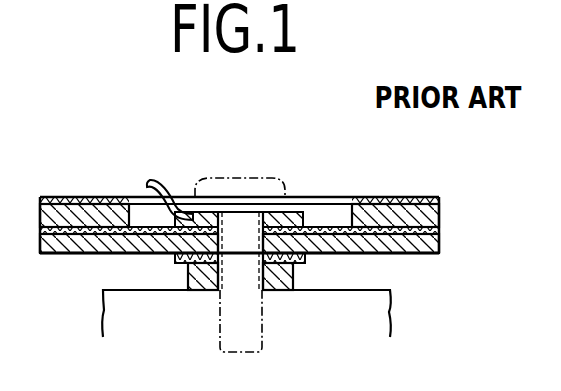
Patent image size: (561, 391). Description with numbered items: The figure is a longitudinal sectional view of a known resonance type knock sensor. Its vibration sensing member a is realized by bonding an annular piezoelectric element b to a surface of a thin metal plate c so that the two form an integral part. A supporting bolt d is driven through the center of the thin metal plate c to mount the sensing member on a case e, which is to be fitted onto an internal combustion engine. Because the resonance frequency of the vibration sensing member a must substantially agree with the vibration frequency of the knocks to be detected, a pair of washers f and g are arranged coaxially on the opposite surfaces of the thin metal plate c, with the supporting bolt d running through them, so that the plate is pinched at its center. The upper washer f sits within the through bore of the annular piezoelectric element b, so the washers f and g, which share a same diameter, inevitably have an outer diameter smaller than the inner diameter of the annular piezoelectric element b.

The vibration sensing member a is at (64, 190).
The annular piezoelectric element b is at (442, 212).
The thin metal plate c is at (434, 256).
The supporting bolt d is at (243, 176).
The case e is at (393, 315).
The upper washer f is at (304, 227).
The lower washer g is at (177, 262).